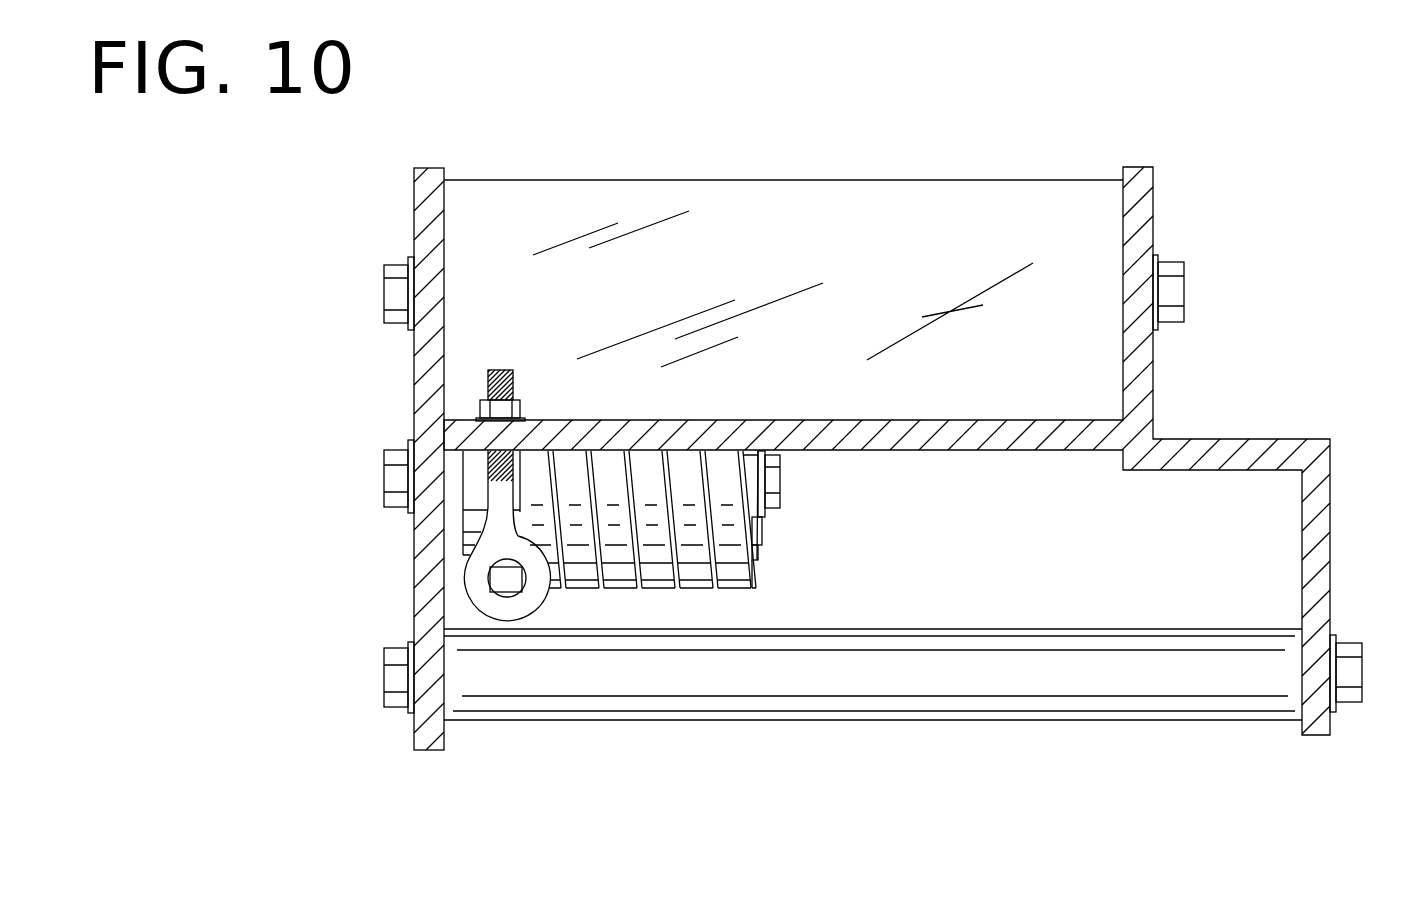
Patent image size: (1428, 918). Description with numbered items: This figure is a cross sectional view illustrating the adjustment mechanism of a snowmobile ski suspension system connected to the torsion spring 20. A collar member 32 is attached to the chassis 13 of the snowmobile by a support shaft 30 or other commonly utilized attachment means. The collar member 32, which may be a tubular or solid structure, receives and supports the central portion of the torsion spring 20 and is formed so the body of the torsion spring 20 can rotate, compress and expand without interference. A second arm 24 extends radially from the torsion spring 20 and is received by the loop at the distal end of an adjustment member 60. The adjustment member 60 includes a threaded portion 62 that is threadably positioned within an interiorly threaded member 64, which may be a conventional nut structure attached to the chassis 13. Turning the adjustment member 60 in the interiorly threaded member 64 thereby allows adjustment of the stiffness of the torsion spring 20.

The chassis 13 is at (1143, 193).
The torsion spring 20 is at (657, 573).
The second arm 24 is at (507, 577).
The support shaft 30 is at (397, 470).
The collar member 32 is at (477, 490).
The adjustment member 60 is at (483, 595).
The threaded portion 62 is at (497, 370).
The interiorly threaded member 64 is at (497, 410).